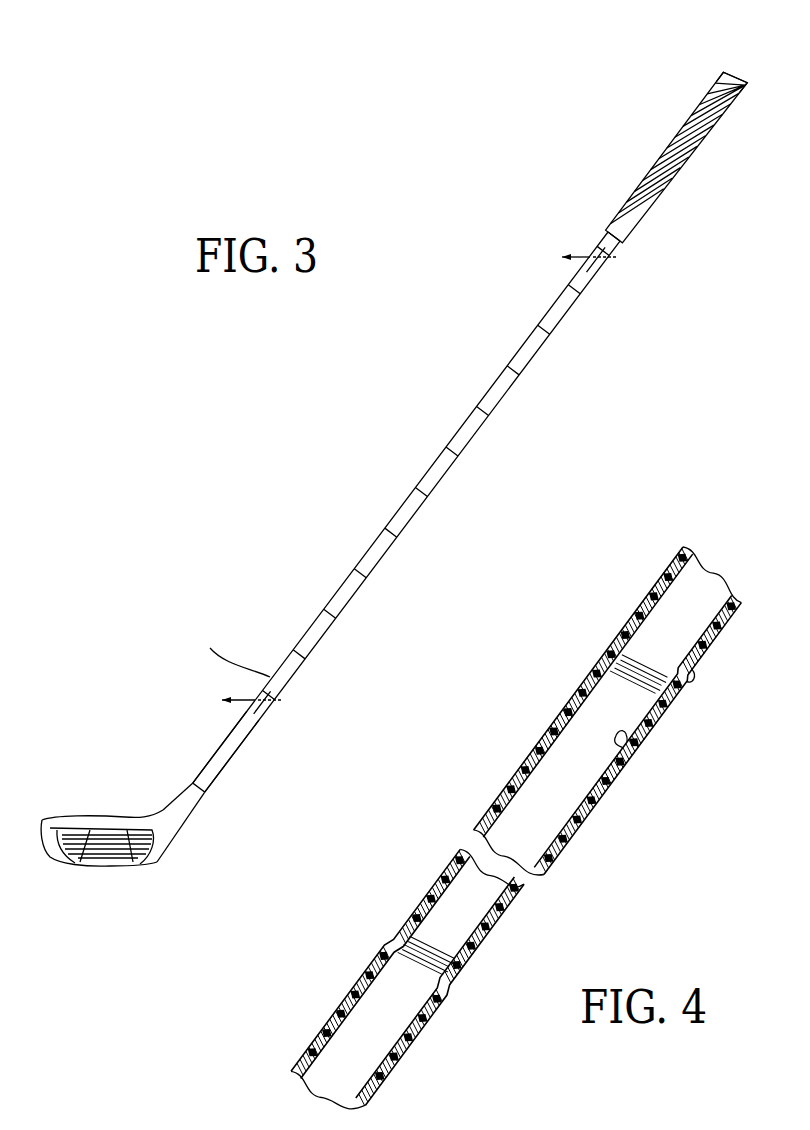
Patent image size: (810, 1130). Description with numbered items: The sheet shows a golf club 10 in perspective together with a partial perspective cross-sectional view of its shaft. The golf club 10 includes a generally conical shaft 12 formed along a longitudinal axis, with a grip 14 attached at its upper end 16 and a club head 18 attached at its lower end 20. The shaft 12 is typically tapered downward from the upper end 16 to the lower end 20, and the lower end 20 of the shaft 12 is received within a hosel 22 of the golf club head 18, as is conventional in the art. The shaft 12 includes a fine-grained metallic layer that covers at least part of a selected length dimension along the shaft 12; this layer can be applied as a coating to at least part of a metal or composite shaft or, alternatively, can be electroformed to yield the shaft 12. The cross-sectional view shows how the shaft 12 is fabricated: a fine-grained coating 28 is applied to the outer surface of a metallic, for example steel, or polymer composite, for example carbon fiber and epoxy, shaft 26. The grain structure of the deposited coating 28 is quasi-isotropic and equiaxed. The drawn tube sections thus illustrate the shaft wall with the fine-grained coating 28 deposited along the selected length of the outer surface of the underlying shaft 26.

In FIG. 3, the golf club 10 is at (387, 475).
In FIG. 3, the shaft 12 is at (497, 375).
In FIG. 4, the shaft 12 is at (556, 703).
In FIG. 3, the grip 14 is at (650, 216).
In FIG. 3, the upper end 16 is at (724, 68).
In FIG. 3, the club head 18 is at (88, 822).
In FIG. 3, the lower end 20 is at (228, 752).
In FIG. 3, the hosel 22 is at (187, 788).
In FIG. 4, the shaft 26 is at (630, 757).
In FIG. 4, the fine-grained coating 28 is at (688, 673).